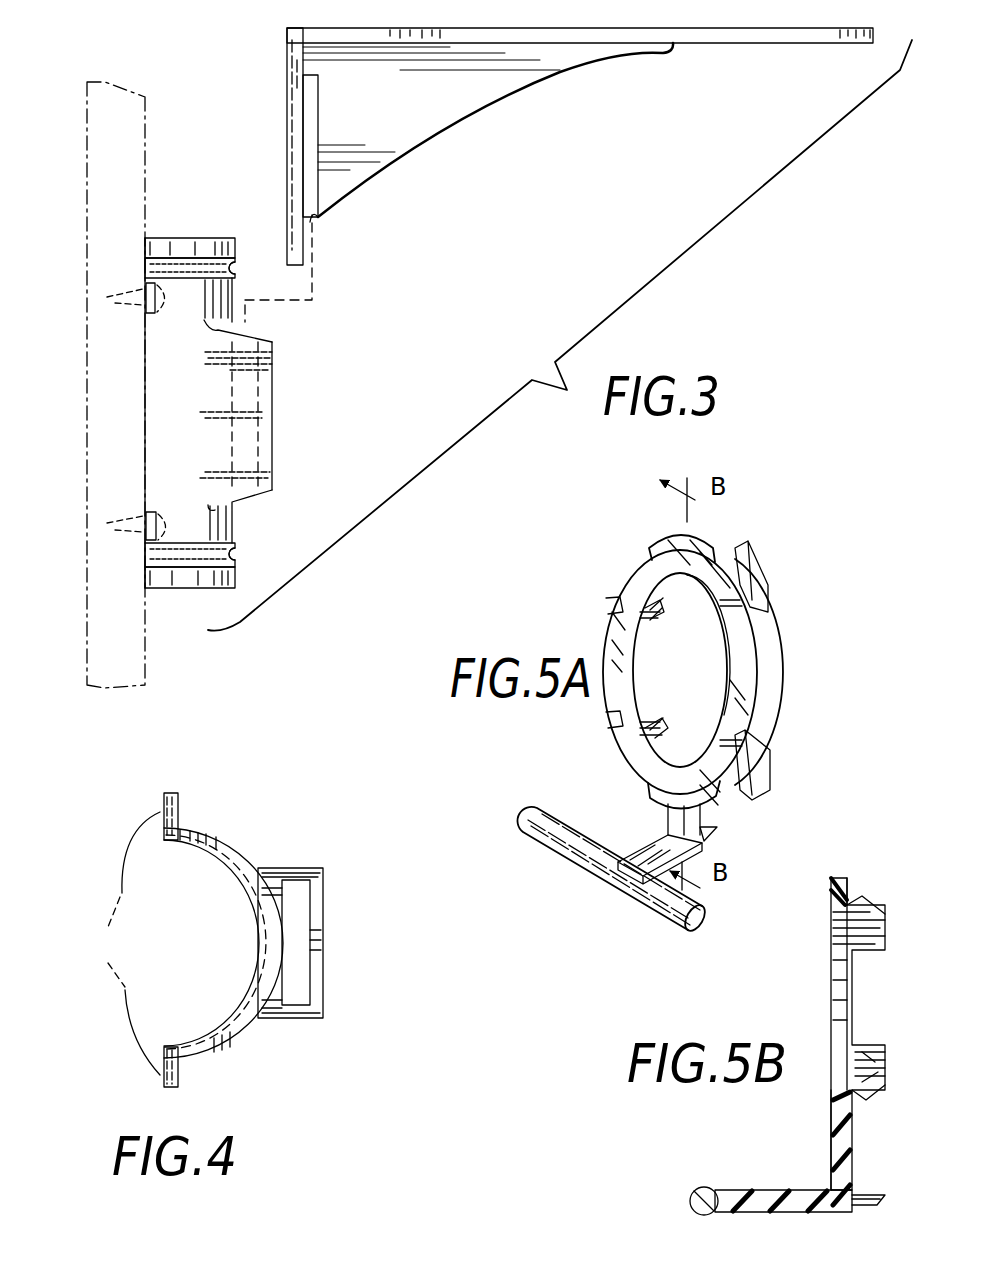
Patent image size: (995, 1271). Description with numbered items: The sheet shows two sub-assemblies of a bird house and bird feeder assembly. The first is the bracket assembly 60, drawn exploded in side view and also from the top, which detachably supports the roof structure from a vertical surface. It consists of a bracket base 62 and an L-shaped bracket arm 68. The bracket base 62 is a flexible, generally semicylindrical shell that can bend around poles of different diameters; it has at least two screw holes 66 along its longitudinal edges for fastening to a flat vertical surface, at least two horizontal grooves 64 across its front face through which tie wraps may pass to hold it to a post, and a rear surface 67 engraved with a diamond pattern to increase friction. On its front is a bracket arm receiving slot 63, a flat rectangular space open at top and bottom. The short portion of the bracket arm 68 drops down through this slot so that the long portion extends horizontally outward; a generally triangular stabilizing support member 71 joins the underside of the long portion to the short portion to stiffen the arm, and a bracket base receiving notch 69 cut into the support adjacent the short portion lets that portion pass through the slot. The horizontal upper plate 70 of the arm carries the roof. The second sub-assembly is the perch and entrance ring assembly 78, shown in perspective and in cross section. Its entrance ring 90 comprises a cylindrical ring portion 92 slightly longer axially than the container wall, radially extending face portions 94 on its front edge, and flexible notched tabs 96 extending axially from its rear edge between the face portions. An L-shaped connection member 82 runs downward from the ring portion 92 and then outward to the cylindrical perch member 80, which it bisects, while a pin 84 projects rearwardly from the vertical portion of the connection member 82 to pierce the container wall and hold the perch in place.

In FIG. 3, the bracket assembly 60 is at (188, 78).
In FIG. 3, the bracket base 62 is at (162, 448).
In FIG. 4, the bracket base 62 is at (224, 838).
In FIG. 3, the bracket arm receiving slot 63 is at (250, 425).
In FIG. 4, the bracket arm receiving slot 63 is at (300, 920).
In FIG. 3, the grooves 64 is at (240, 266).
In FIG. 3, the screw holes 66 is at (145, 318).
In FIG. 4, the screw holes 66 is at (125, 943).
In FIG. 4, the rear surface 67 is at (258, 947).
In FIG. 3, the bracket arm 68 is at (327, 28).
In FIG. 3, the bracket base receiving notch 69 is at (315, 215).
In FIG. 3, the horizontal plate 70 is at (852, 28).
In FIG. 3, the stabilizing support member 71 is at (418, 128).
In FIG. 5A, the perch and entrance ring assembly 78 is at (799, 517).
In FIG. 5A, the perch member 80 is at (615, 873).
In FIG. 5B, the perch member 80 is at (700, 1190).
In FIG. 5A, the connection member 82 is at (636, 855).
In FIG. 5B, the connection member 82 is at (765, 1190).
In FIG. 5A, the pin 84 is at (714, 832).
In FIG. 5B, the pin 84 is at (880, 1195).
In FIG. 5A, the entrance ring 90 is at (806, 687).
In FIG. 5A, the ring portion 92 is at (630, 596).
In FIG. 5B, the ring portion 92 is at (840, 1005).
In FIG. 5A, the face portions 94 is at (665, 552).
In FIG. 5A, the notched tabs 96 is at (766, 608).
In FIG. 5B, the notched tabs 96 is at (872, 905).